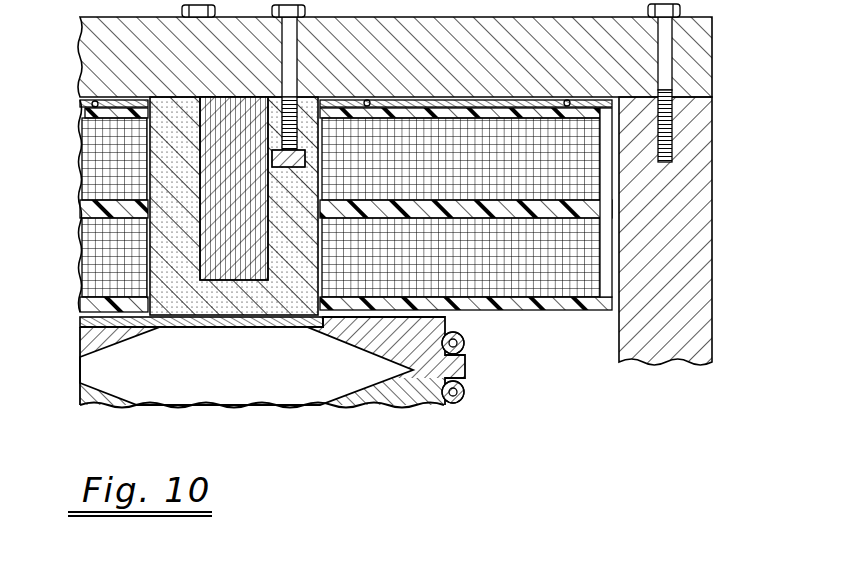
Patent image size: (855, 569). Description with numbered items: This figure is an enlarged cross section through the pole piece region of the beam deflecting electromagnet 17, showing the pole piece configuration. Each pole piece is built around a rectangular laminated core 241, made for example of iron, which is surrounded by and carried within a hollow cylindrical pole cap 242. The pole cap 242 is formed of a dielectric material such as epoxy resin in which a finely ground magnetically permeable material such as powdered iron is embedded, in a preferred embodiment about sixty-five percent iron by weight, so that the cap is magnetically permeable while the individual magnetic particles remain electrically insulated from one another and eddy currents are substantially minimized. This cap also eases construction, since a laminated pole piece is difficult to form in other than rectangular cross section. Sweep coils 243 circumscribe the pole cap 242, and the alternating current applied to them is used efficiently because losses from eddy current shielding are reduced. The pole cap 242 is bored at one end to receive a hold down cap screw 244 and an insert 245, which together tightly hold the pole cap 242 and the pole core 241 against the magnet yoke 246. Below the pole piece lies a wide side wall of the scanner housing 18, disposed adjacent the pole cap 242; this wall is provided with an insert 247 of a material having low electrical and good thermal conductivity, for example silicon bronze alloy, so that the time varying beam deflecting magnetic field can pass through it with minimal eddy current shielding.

The beam deflecting electromagnet 17 is at (76, 185).
The scanner housing 18 is at (363, 340).
The laminated core 241 is at (207, 258).
The pole cap 242 is at (234, 238).
The sweep coils 243 is at (463, 170).
The hold down cap screws 244 is at (292, 59).
The inserts 245 is at (350, 170).
The magnet yoke 246 is at (698, 68).
The inserts 247 is at (243, 320).